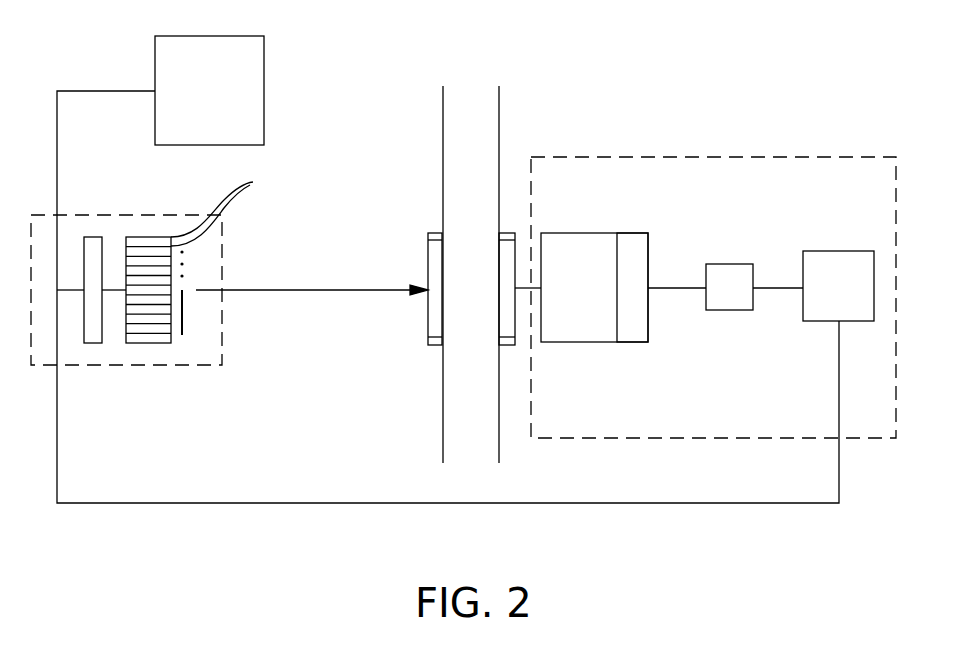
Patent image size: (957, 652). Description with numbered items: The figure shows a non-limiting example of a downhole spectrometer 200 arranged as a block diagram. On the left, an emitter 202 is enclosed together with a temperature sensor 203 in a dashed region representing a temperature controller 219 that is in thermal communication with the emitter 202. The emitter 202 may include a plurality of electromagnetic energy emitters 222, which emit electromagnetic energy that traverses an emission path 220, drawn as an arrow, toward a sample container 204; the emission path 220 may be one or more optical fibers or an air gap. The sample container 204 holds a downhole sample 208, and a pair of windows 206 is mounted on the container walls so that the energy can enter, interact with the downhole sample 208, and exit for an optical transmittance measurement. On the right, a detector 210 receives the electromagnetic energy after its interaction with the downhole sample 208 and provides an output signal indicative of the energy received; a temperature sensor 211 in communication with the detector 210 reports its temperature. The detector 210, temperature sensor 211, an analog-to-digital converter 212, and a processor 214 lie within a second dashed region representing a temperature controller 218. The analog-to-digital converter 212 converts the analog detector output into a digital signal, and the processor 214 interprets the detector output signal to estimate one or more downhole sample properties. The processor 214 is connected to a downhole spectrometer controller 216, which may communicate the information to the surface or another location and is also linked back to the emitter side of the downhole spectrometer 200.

The downhole spectrometer 200 is at (333, 531).
The emitter 202 is at (150, 343).
The temperature sensor 203 is at (89, 237).
The sample container 204 is at (499, 107).
The window 206 is at (428, 236).
The downhole sample 208 is at (479, 62).
The detector 210 is at (572, 342).
The temperature sensor 211 is at (630, 342).
The analog-to-digital converter 212 is at (730, 264).
The processor 214 is at (840, 251).
The downhole spectrometer controller 216 is at (264, 70).
The temperature controller 218 is at (775, 157).
The temperature controller 219 is at (222, 330).
The emission path 220 is at (292, 288).
The electromagnetic energy emitters 222 is at (242, 207).